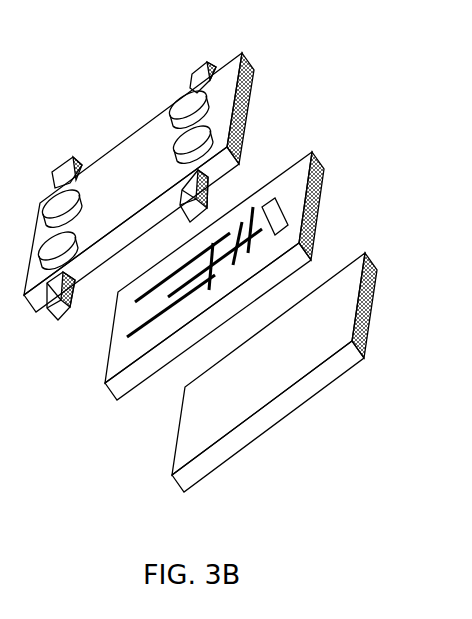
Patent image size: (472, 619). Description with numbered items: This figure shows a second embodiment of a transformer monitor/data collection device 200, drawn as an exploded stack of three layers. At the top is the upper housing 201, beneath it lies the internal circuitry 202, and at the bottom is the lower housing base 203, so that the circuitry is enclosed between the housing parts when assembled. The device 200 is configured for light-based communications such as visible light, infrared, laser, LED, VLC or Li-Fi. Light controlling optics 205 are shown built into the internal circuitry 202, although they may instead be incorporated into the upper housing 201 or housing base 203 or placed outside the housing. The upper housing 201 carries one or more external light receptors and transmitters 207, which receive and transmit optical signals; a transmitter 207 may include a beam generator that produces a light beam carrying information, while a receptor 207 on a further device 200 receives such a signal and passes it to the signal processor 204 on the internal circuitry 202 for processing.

The transformer monitor/data collection device 200 is at (344, 195).
The upper housing 201 is at (90, 185).
The internal circuitry 202 is at (111, 348).
The lower housing base 203 is at (178, 432).
The signal processor 204 is at (285, 200).
The light controlling optics 205 is at (251, 206).
The external light receptors and transmitters 207 is at (172, 109).